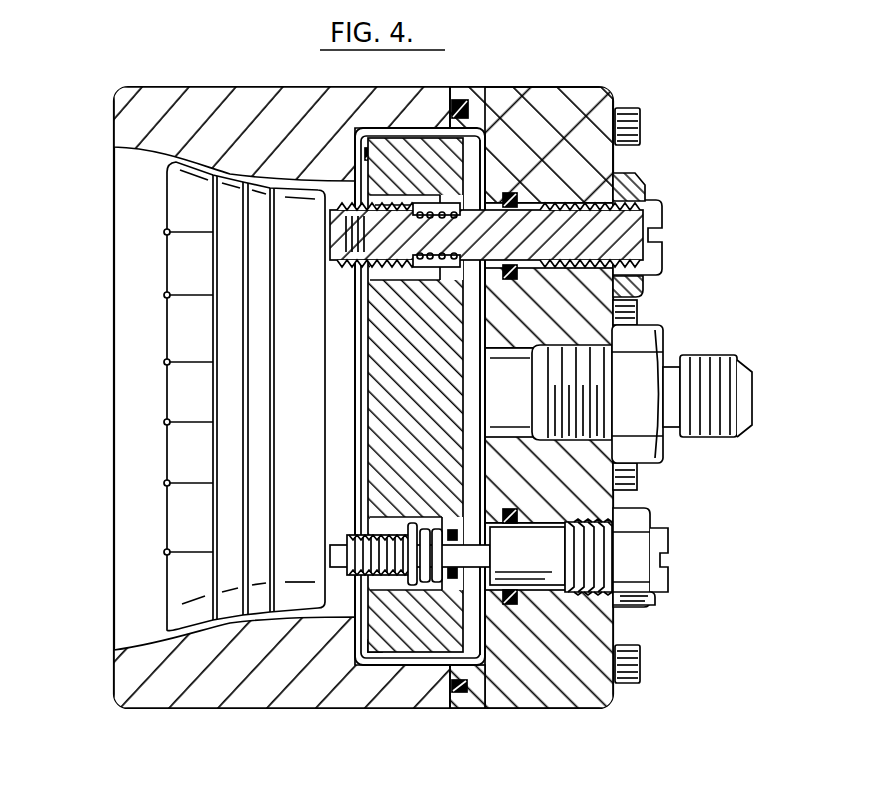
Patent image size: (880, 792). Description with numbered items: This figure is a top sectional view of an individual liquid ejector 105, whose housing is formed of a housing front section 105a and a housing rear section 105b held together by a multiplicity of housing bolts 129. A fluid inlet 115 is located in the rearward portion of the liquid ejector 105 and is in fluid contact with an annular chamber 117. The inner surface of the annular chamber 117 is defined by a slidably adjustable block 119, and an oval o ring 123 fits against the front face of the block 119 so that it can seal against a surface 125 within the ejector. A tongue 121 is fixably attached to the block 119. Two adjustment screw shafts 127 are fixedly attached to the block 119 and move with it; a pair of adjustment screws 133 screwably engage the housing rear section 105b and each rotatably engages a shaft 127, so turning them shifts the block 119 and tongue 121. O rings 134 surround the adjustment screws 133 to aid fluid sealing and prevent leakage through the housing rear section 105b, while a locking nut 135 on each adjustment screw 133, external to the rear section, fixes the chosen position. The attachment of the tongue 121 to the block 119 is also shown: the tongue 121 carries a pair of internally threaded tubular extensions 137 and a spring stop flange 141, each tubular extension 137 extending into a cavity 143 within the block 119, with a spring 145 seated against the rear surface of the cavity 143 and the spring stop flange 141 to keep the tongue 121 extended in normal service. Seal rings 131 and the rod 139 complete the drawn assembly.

The liquid ejector 105 is at (120, 719).
The housing front section 105a is at (194, 709).
The housing rear section 105b is at (539, 710).
The fluid inlet 115 is at (752, 380).
The annular chamber 117 is at (393, 127).
The slidably adjustable block 119 is at (380, 385).
The tongue 121 is at (168, 247).
The oval o ring 123 is at (352, 143).
The surface 125 is at (362, 150).
The adjustment screw shaft 127 is at (500, 200).
The housing bolt 129 is at (640, 126).
The O-ring seal 131 is at (465, 96).
The adjustment screw 133 is at (663, 268).
The O ring 134 is at (516, 198).
The locking nut 135 is at (647, 193).
The tubular extension 137 is at (335, 562).
The rod 139 is at (345, 553).
The spring stop flange 141 is at (425, 582).
The cavity 143 is at (430, 278).
The spring 145 is at (415, 255).